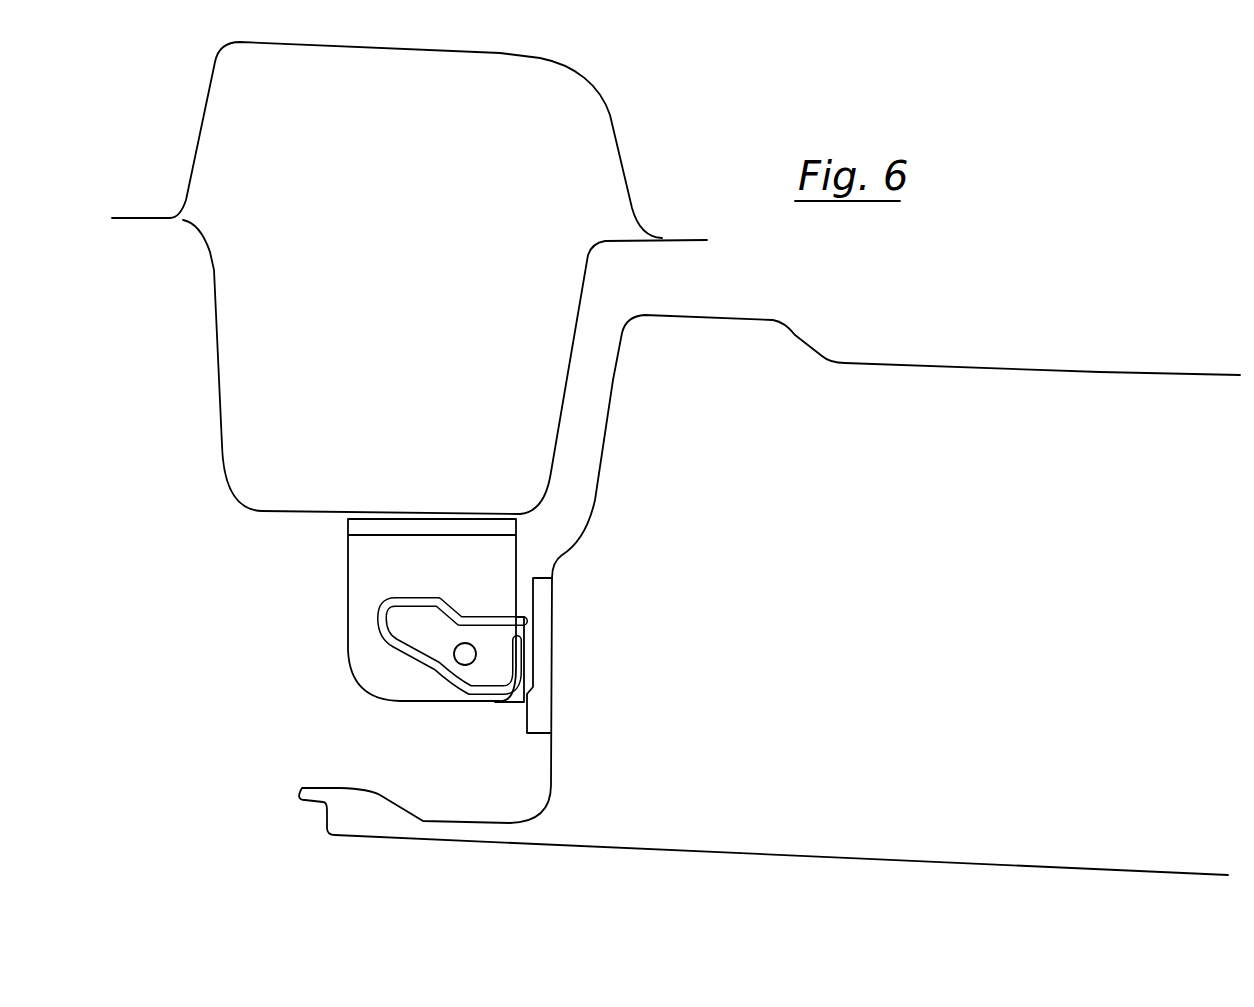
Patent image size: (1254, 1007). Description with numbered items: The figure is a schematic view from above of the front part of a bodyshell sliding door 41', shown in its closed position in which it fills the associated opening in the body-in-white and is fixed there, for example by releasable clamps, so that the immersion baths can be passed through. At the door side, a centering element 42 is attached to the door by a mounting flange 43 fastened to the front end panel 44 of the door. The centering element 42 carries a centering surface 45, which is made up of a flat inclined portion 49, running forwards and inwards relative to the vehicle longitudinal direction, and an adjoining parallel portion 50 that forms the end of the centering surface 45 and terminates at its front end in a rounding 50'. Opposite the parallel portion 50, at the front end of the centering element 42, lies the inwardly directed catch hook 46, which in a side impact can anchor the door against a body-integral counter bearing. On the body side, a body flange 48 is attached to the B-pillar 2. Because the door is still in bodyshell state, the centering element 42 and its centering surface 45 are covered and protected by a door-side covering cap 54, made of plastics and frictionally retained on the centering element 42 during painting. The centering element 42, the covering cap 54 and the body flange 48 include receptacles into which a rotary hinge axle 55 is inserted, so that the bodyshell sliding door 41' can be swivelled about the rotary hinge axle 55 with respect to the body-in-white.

The B-pillar 2 is at (213, 335).
The bodyshell sliding door 41' is at (545, 900).
The centering element 42 is at (601, 652).
The mounting flange 43 is at (543, 720).
The front end panel 44 is at (550, 770).
The centering surface 45 is at (454, 640).
The catch hook 46 is at (393, 608).
The body flange 48 is at (363, 550).
The inclined portion 49 is at (462, 675).
The parallel portion 50 is at (452, 613).
The rounding 50' is at (398, 526).
The covering cap 54 is at (430, 662).
The rotary hinge axle 55 is at (478, 650).